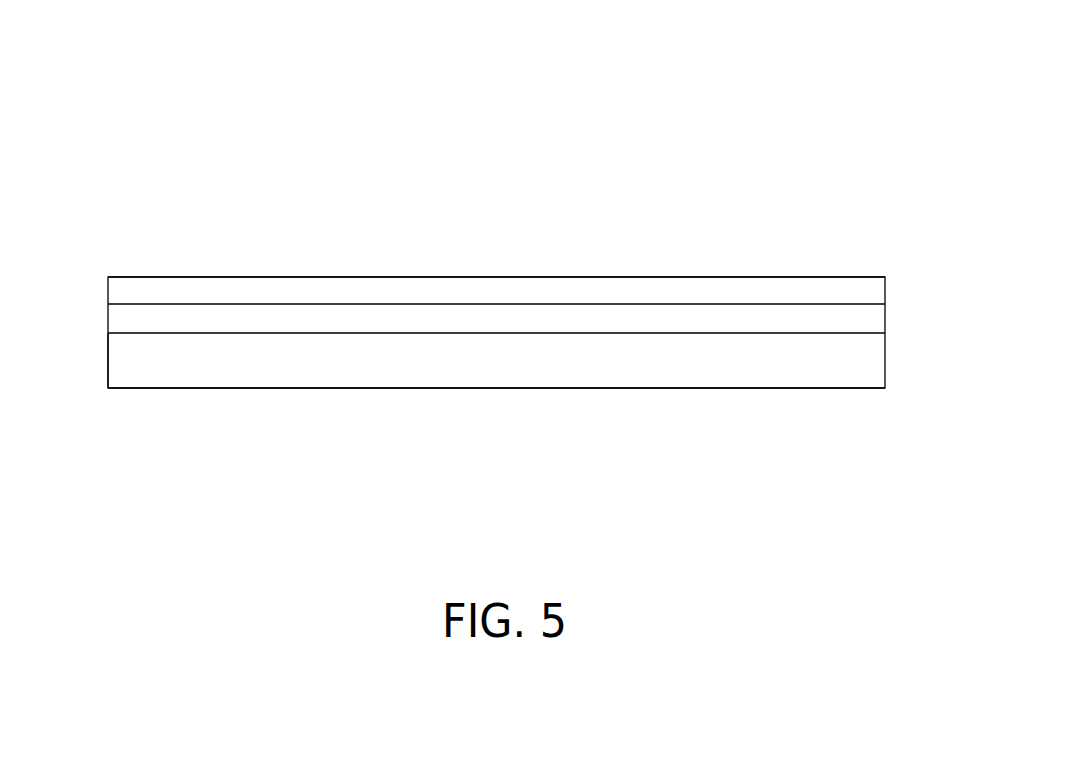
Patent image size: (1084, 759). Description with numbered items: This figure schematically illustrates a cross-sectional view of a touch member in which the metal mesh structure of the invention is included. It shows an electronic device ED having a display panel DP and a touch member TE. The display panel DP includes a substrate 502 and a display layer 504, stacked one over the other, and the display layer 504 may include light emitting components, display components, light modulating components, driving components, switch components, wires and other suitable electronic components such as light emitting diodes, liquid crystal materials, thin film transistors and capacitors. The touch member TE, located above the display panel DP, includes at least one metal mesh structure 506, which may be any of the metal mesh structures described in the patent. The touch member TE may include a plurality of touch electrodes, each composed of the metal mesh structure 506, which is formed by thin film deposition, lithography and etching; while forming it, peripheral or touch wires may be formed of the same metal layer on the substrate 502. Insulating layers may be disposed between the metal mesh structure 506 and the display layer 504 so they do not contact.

The electronic device ED is at (800, 96).
The metal mesh structure 506 is at (863, 293).
The display layer 504 is at (863, 321).
The substrate 502 is at (863, 363).
The touch member TE is at (102, 278).
The display panel DP is at (102, 307).